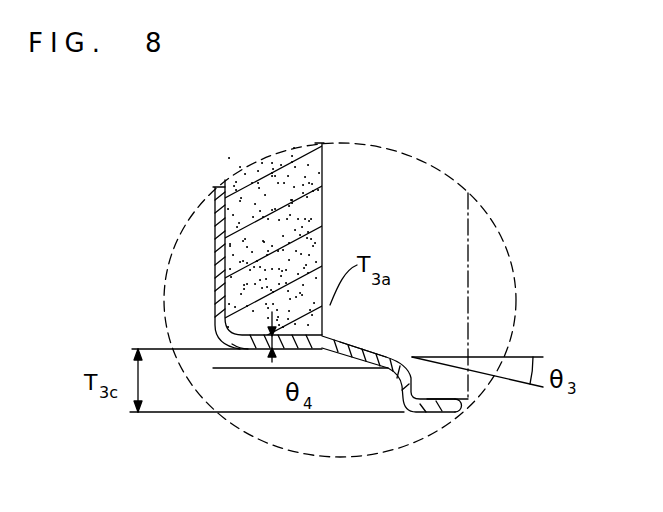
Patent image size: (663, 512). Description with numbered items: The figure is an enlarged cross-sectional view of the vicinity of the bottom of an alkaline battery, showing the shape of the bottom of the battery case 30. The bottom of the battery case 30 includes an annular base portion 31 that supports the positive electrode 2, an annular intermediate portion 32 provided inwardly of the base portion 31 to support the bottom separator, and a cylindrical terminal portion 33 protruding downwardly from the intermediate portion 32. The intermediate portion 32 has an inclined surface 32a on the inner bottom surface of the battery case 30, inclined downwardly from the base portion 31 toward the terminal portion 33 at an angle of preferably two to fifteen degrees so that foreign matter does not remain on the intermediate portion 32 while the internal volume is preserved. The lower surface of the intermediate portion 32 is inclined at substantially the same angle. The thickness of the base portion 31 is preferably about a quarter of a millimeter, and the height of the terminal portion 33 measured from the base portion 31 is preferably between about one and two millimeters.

The positive electrode 2 is at (243, 265).
The battery case 30 is at (214, 233).
The base portion 31 is at (262, 345).
The intermediate portion 32 is at (352, 373).
The inclined surface 32a is at (367, 348).
The terminal portion 33 is at (433, 407).